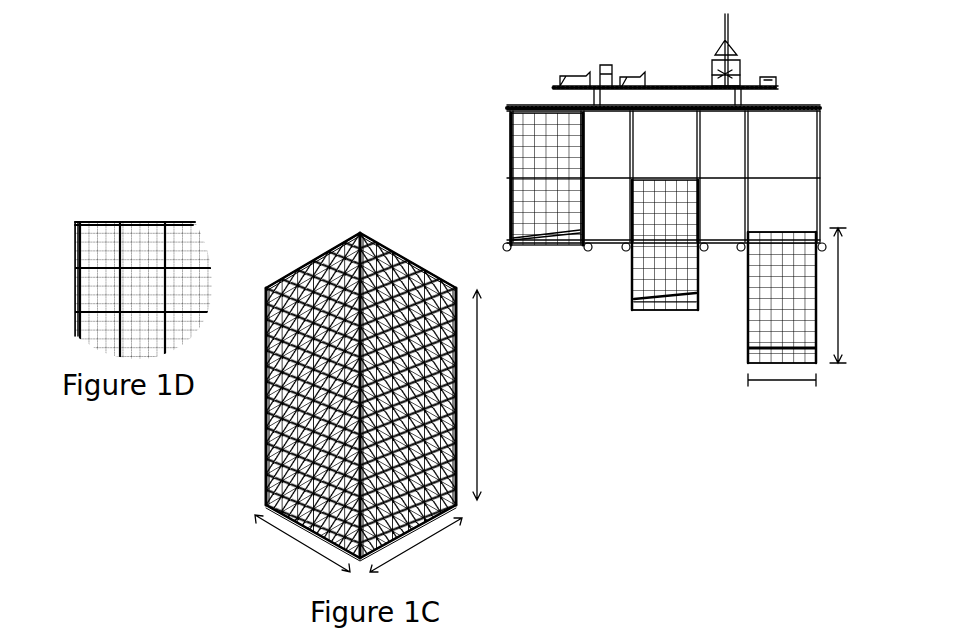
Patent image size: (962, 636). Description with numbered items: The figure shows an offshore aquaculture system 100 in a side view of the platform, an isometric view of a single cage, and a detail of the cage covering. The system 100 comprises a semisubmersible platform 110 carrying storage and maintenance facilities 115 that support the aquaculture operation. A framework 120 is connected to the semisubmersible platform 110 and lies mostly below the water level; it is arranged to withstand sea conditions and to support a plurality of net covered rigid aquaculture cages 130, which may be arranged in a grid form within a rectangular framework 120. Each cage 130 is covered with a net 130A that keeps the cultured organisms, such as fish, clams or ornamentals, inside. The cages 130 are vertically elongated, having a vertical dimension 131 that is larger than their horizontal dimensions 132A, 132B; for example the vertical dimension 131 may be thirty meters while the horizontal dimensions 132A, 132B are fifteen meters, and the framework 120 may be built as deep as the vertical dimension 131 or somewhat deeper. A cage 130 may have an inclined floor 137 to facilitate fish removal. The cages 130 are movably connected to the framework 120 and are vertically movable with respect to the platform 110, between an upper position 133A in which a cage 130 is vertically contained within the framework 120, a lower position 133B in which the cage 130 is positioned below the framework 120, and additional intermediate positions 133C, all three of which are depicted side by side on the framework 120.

In FIG. 1B, the offshore aquaculture system 100 is at (488, 53).
In FIG. 1B, the semisubmersible platform 110 is at (778, 88).
In FIG. 1B, the storage and maintenance facilities 115 is at (552, 59).
In FIG. 1B, the framework 120 is at (821, 128).
In FIG. 1D, the net covered rigid aquaculture cage 130 is at (150, 222).
In FIG. 1D, the net 130A is at (106, 232).
In FIG. 1B, the vertical dimension 131 is at (848, 290).
In FIG. 1C, the vertical dimension 131 is at (497, 395).
In FIG. 1B, the horizontal dimension 132A is at (782, 395).
In FIG. 1C, the horizontal dimension 132A is at (421, 549).
In FIG. 1C, the horizontal dimension 132B is at (302, 548).
In FIG. 1B, the upper position 133A is at (472, 183).
In FIG. 1B, the lower position 133B is at (857, 333).
In FIG. 1B, the intermediate position 133C is at (629, 326).
In FIG. 1B, the inclined floor 137 is at (673, 300).